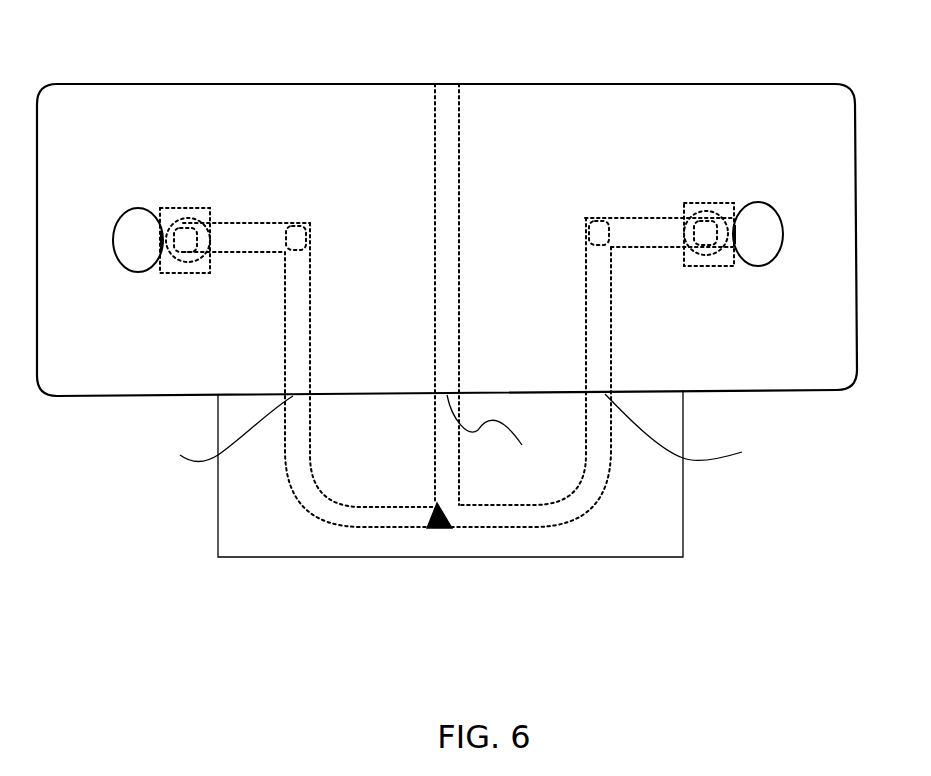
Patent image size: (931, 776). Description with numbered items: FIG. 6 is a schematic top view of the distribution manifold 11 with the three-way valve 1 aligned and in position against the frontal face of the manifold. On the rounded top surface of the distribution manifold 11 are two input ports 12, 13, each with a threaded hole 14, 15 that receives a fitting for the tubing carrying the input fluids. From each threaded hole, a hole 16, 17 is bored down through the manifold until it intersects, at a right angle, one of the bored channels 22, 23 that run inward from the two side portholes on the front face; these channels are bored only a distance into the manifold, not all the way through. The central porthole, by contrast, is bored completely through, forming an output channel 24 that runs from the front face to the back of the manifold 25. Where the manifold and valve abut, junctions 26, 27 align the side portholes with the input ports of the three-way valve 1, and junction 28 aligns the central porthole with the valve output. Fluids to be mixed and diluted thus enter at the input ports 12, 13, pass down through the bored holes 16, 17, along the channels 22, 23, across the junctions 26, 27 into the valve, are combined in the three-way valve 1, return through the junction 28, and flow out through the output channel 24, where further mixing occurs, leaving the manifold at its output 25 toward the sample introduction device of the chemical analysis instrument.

The 3-way valve 1 is at (286, 567).
The distribution manifold 11 is at (116, 77).
The input port 12 is at (133, 273).
The input port 13 is at (777, 258).
The threaded hole 14 is at (190, 230).
The threaded hole 15 is at (730, 210).
The bored hole 16 is at (247, 243).
The bored hole 17 is at (660, 230).
The bored channel 22 is at (305, 325).
The bored channel 23 is at (603, 305).
The output channel 24 is at (463, 303).
The manifold output 25 is at (446, 84).
The junction 26 is at (221, 432).
The junction 27 is at (690, 428).
The junction 28 is at (493, 434).